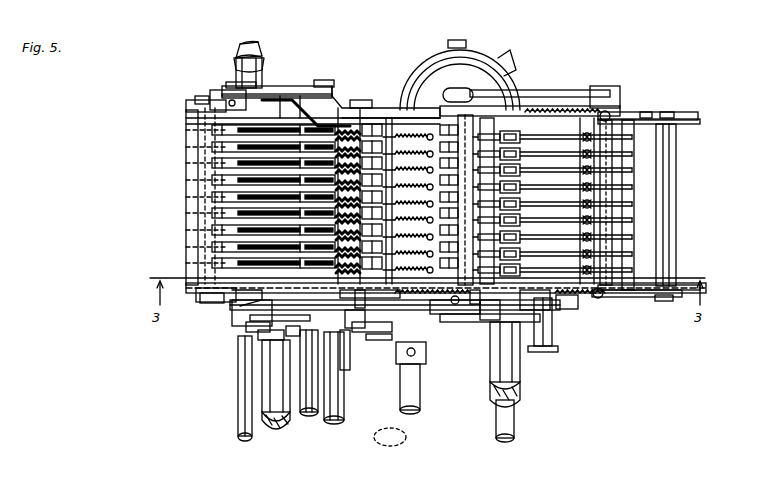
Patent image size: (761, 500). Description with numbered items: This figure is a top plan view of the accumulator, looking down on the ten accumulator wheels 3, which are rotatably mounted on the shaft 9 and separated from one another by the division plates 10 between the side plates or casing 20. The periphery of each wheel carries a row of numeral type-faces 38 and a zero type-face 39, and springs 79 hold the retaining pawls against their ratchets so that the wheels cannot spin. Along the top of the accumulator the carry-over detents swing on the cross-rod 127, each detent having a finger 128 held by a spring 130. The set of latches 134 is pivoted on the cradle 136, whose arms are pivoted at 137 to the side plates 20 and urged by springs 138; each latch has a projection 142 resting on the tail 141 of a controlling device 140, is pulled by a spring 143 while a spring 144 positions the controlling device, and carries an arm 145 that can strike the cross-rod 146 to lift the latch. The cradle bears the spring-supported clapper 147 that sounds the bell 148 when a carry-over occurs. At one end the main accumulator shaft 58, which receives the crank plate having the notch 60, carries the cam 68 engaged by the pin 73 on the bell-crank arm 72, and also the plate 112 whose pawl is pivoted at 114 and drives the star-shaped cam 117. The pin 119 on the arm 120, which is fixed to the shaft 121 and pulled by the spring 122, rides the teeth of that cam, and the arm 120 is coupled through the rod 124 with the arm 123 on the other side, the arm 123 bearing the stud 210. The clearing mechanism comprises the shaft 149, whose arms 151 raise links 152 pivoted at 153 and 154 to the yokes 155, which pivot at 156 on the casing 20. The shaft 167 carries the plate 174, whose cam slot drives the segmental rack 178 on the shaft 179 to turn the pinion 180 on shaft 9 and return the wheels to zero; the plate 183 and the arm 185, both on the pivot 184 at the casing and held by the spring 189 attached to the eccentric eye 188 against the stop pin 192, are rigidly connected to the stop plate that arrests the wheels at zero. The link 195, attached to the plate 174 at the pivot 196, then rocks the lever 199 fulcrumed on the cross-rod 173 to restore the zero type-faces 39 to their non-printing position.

The accumulator wheels 3 is at (228, 180).
The shaft 9 is at (296, 100).
The division plates 10 is at (192, 172).
The side plates 20 is at (690, 118).
The type-faces 38 is at (240, 248).
The zero type-face 39 is at (300, 125).
The main accumulator shaft 58 is at (412, 414).
The notch 60 is at (345, 122).
The cam 68 is at (452, 314).
The bell-crank arm 72 is at (548, 308).
The pin 73 is at (546, 330).
The springs 79 is at (482, 92).
The plate 112 is at (392, 342).
The pivot 114 is at (402, 346).
The cam 117 is at (348, 334).
The pin 119 is at (462, 322).
The arm 120 is at (504, 334).
The shaft 121 is at (580, 296).
The spring 122 is at (477, 306).
The arm 123 is at (556, 108).
The rod 124 is at (600, 100).
The cross-rod 127 is at (396, 125).
The finger 128 is at (410, 150).
The spring 130 is at (358, 132).
The latches 134 is at (615, 212).
The cradle 136 is at (645, 112).
The pivot 137 is at (676, 112).
The springs 138 is at (628, 112).
The controlling device 140 is at (488, 160).
The tail 141 is at (552, 238).
The projection 142 is at (522, 162).
The spring 143 is at (600, 245).
The spring 144 is at (490, 160).
The arm 145 is at (372, 334).
The cross-rod 146 is at (674, 135).
The clapper 147 is at (462, 94).
The bell 148 is at (478, 58).
The shaft 149 is at (246, 442).
The arms 151 is at (238, 88).
The links 152 is at (292, 94).
The pivot 153 is at (326, 80).
The pivot 154 is at (242, 60).
The yokes 155 is at (258, 86).
The pivot 156 is at (358, 100).
The shaft 167 is at (304, 380).
The cross-rod 173 is at (500, 402).
The plate 174 is at (368, 290).
The segmental rack 178 is at (310, 400).
The shaft 179 is at (332, 412).
The pinion 180 is at (276, 424).
The plate 183 is at (206, 290).
The pivot 184 is at (216, 98).
The arm 185 is at (196, 103).
The eccentric eye 188 is at (252, 312).
The spring 189 is at (270, 326).
The stop pin 192 is at (245, 302).
The link 195 is at (242, 400).
The pivot 196 is at (268, 350).
The lever 199 is at (496, 322).
The stud 210 is at (576, 110).